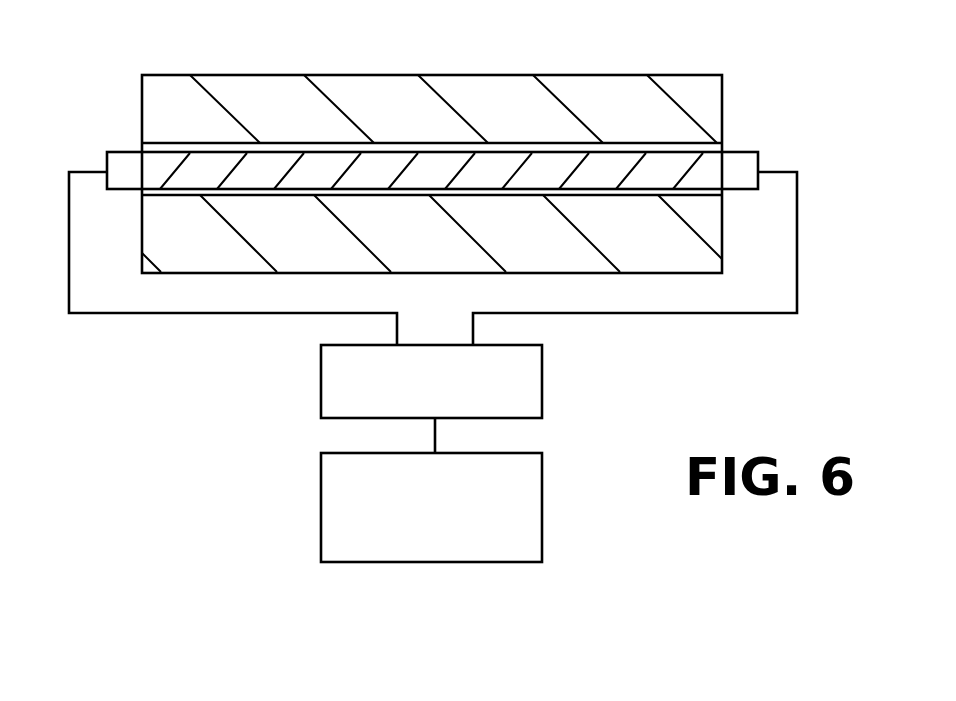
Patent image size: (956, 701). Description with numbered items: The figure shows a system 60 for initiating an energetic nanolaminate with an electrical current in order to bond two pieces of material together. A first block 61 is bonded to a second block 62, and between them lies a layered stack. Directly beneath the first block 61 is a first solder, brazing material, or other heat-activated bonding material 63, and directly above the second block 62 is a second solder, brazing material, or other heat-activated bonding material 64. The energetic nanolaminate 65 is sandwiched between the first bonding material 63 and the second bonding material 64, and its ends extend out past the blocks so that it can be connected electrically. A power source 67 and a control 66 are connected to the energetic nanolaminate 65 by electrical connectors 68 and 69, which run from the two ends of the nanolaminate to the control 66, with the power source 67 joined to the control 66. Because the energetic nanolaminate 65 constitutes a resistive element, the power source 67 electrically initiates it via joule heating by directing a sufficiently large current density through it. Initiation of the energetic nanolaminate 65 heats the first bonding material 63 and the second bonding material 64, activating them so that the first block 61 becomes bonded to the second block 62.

The system 60 is at (665, 55).
The first block 61 is at (270, 97).
The second block 62 is at (307, 258).
The first bonding material 63 is at (163, 143).
The second bonding material 64 is at (170, 197).
The energetic nanolaminate 65 is at (387, 167).
The control 66 is at (320, 392).
The power source 67 is at (320, 485).
The electrical connector 68 is at (760, 155).
The electrical connector 69 is at (107, 157).